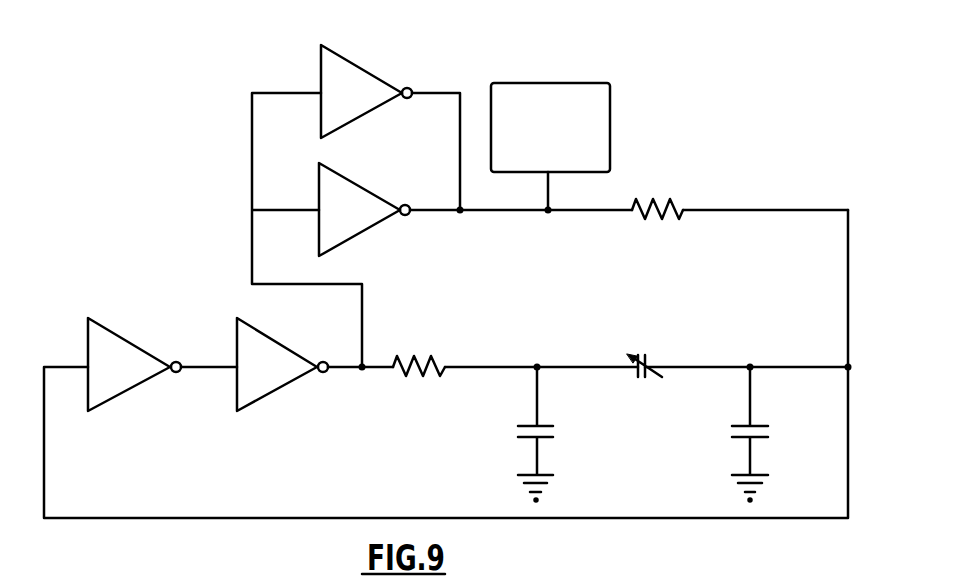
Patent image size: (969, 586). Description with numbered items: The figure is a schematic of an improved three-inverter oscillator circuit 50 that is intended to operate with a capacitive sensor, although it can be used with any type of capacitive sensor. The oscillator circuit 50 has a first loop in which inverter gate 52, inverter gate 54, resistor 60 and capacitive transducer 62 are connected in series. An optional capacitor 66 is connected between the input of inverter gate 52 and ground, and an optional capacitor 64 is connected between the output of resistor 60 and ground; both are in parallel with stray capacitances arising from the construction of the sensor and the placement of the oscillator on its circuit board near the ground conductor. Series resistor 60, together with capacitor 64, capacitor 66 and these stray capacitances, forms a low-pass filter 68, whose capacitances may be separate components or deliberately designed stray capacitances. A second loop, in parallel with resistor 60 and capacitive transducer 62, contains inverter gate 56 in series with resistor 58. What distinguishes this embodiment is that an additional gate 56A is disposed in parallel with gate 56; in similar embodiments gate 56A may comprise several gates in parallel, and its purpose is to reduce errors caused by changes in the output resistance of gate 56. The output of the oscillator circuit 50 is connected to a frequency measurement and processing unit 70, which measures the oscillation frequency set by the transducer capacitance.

The oscillator circuit 50 is at (732, 106).
The inverter gate 52 is at (88, 347).
The inverter gate 54 is at (237, 347).
The inverter gate 56 is at (319, 192).
The gate 56A is at (321, 77).
The resistor 58 is at (664, 200).
The resistor 60 is at (428, 355).
The capacitive transducer 62 is at (657, 357).
The capacitor 64 is at (533, 438).
The capacitor 66 is at (744, 438).
The low-pass filter 68 is at (635, 467).
The frequency measurement and processing unit 70 is at (610, 136).